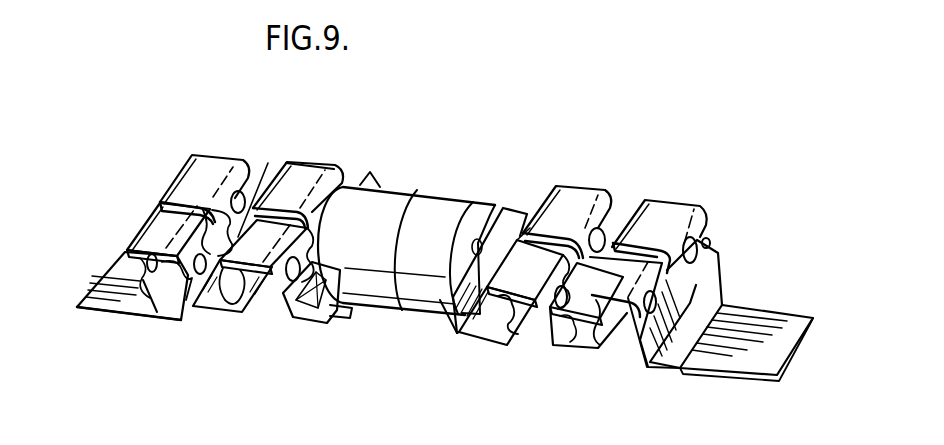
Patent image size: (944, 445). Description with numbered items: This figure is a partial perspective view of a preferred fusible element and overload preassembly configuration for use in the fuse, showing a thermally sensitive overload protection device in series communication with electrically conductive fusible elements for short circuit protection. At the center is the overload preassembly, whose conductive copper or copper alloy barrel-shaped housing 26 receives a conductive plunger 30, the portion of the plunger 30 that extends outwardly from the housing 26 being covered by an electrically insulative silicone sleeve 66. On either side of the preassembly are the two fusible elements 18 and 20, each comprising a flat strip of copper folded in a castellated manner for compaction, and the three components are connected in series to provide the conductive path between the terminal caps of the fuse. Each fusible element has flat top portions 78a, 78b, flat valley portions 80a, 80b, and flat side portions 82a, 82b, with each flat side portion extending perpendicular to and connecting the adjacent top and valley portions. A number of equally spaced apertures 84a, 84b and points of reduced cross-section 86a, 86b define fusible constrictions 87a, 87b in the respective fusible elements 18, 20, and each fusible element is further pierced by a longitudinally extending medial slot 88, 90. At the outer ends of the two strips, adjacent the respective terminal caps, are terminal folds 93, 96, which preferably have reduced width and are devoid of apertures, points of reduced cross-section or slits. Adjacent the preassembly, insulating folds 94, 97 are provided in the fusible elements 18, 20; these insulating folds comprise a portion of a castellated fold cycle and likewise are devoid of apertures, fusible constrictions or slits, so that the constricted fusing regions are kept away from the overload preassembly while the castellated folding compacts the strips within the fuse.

The fusible element 18 is at (217, 162).
The fusible element 20 is at (565, 198).
The barrel-shaped housing 26 is at (400, 198).
The plunger 30 is at (500, 215).
The silicone sleeve 66 is at (453, 200).
The flat top portion 78a is at (150, 233).
The flat top portion 78b is at (663, 203).
The flat valley portion 80a is at (217, 320).
The flat valley portion 80b is at (582, 340).
The flat side portion 82a is at (128, 312).
The flat side portion 82b is at (613, 343).
The apertures 84a is at (247, 192).
The apertures 84b is at (547, 320).
The points of reduced cross-section 86a is at (313, 323).
The points of reduced cross-section 86b is at (700, 233).
The constriction 87a is at (190, 277).
The constriction 87b is at (710, 243).
The medial slot 88 is at (182, 200).
The medial slot 90 is at (637, 245).
The terminal fold 93 is at (115, 266).
The insulating fold 94 is at (340, 307).
The terminal fold 96 is at (777, 353).
The insulating fold 97 is at (442, 303).